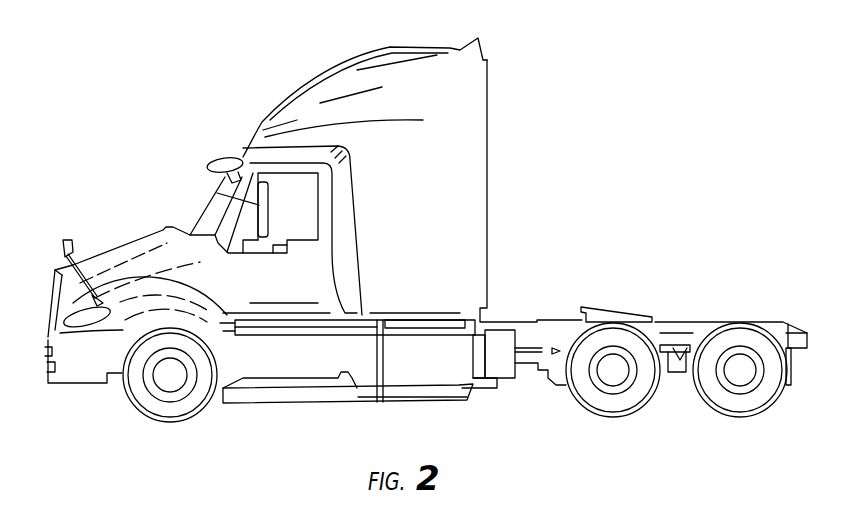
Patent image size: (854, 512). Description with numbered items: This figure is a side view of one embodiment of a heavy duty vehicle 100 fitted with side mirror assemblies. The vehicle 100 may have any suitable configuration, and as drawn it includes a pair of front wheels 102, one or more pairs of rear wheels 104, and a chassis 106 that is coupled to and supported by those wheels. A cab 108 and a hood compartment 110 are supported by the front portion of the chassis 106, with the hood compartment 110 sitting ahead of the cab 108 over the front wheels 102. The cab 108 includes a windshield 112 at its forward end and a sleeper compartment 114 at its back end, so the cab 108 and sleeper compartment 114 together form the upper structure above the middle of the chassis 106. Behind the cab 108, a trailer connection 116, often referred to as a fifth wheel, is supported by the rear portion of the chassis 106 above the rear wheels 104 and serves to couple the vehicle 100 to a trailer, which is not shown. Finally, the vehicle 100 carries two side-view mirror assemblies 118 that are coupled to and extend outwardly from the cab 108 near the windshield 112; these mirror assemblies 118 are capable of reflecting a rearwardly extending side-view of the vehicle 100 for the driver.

The heavy duty vehicle 100 is at (147, 82).
The front wheels 102 is at (154, 416).
The rear wheels 104 is at (615, 404).
The chassis 106 is at (440, 397).
The cab 108 is at (262, 125).
The hood compartment 110 is at (122, 248).
The windshield 112 is at (212, 208).
The sleeper compartment 114 is at (447, 160).
The trailer connection 116 is at (620, 312).
The side-view mirror assemblies 118 is at (211, 206).